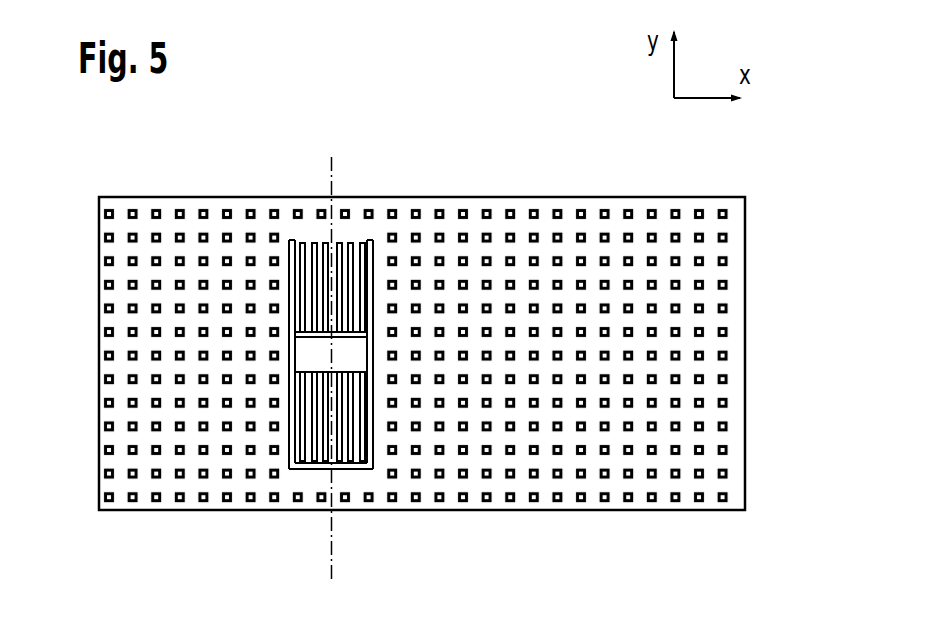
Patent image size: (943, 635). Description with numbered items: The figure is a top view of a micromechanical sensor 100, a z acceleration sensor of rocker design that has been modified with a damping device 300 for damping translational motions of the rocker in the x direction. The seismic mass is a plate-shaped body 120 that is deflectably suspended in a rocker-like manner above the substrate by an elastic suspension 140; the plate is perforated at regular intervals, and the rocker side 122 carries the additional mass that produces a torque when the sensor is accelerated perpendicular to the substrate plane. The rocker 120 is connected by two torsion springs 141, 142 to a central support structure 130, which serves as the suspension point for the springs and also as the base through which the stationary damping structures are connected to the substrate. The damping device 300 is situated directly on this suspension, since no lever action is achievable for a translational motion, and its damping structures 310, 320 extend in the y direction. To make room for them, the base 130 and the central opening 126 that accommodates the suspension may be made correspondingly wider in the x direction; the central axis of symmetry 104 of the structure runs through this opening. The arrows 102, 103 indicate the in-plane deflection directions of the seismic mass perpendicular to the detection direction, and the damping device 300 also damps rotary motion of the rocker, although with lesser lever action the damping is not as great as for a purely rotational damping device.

The micromechanical sensor 100 is at (752, 446).
The arrow 102 is at (730, 119).
The arrow 103 is at (818, 365).
The axis of symmetry 104 is at (332, 165).
The plate-shaped body 120 is at (99, 455).
The rocker side 122 is at (642, 520).
The central opening 126 is at (291, 333).
The central support structure 130 is at (288, 468).
The elastic suspension 140 is at (314, 480).
The torsion spring 141 is at (329, 263).
The torsion spring 142 is at (333, 442).
The damping device 300 is at (374, 237).
The damping structure 310 is at (363, 447).
The damping structure 320 is at (356, 405).